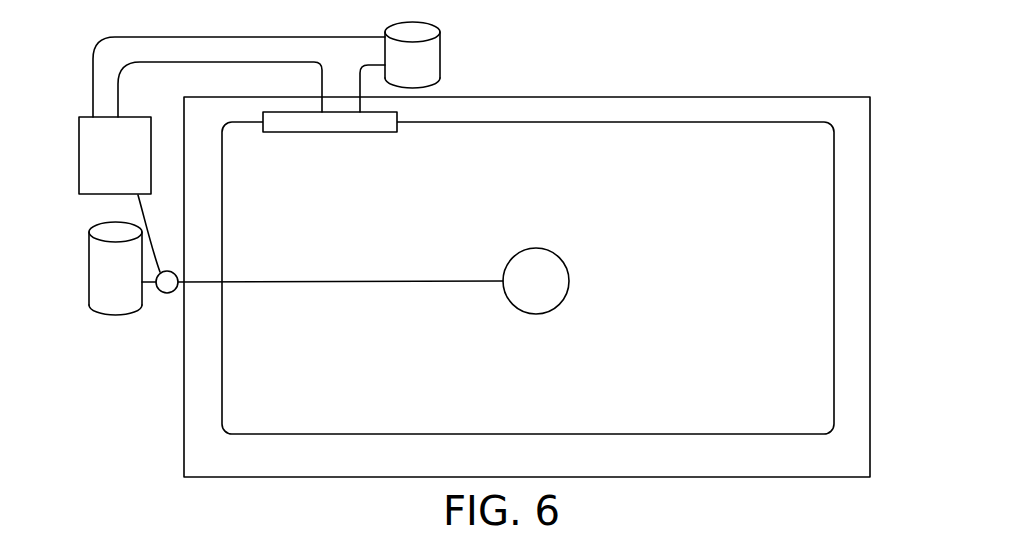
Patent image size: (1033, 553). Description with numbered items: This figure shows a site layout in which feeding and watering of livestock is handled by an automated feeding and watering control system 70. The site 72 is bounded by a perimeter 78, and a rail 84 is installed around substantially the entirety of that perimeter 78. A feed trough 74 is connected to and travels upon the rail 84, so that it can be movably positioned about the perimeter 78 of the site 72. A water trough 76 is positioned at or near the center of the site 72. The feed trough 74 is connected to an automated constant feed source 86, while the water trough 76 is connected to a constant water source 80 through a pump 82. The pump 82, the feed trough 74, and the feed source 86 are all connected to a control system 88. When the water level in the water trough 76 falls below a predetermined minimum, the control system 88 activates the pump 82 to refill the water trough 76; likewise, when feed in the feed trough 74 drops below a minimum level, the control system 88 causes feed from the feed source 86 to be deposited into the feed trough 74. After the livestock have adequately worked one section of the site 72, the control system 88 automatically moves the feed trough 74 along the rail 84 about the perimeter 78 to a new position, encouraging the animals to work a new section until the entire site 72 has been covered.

The automated feeding and watering control system 70 is at (165, 452).
The site 72 is at (712, 388).
The feed trough 74 is at (367, 120).
The water trough 76 is at (560, 284).
The perimeter 78 is at (693, 97).
The constant water source 80 is at (120, 288).
The pump 82 is at (168, 272).
The rail 84 is at (640, 122).
The automated constant feed source 86 is at (440, 66).
The control system 88 is at (93, 172).